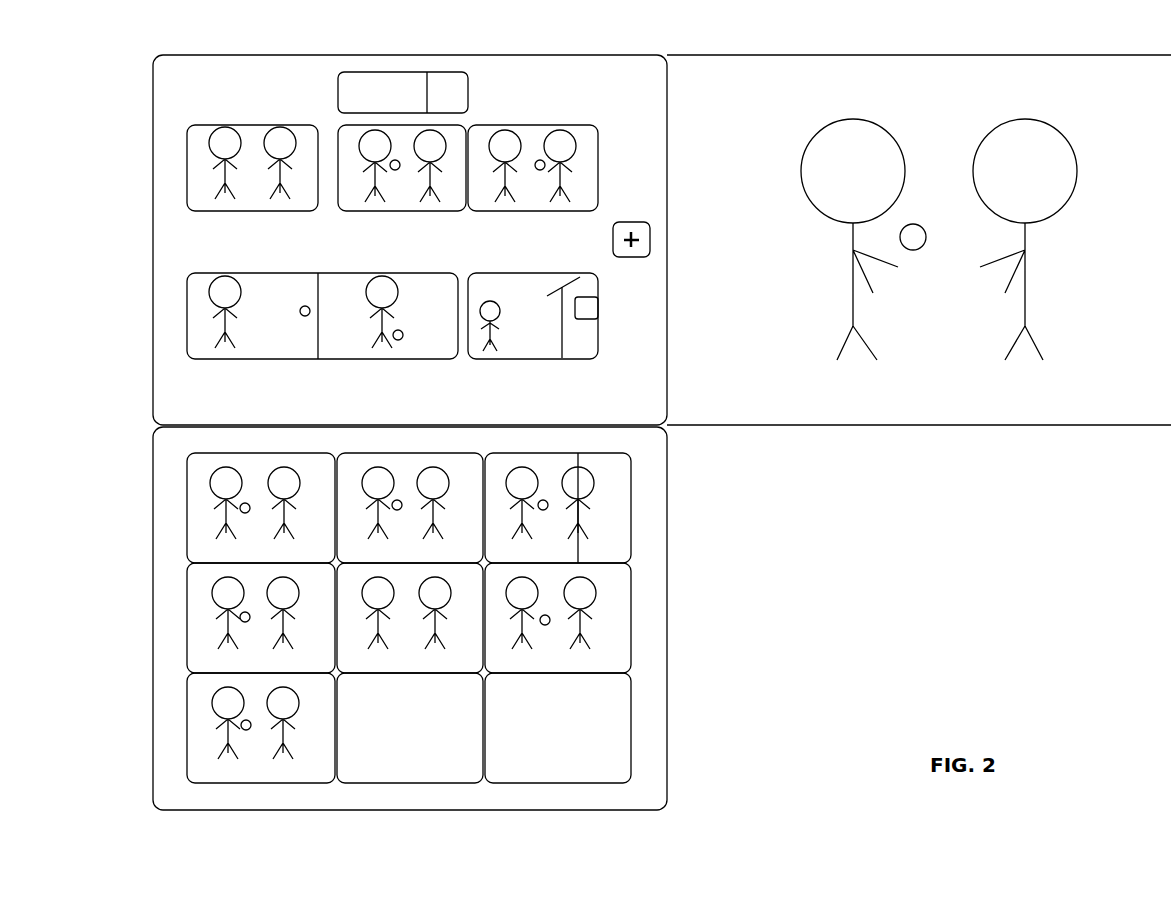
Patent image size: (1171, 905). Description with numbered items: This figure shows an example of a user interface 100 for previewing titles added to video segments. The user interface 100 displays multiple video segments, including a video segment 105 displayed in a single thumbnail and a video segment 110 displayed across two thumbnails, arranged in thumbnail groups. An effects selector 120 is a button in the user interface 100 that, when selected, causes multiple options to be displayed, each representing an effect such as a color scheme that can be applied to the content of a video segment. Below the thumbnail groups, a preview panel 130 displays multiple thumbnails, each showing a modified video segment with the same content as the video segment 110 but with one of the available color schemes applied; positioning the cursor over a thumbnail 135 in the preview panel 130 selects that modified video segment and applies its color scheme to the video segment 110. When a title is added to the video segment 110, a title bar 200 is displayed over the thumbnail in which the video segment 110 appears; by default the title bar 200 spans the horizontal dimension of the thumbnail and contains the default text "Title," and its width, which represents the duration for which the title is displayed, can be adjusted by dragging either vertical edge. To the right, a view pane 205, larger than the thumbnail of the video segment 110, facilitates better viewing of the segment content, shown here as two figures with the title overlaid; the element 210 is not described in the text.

The user interface 100 is at (153, 358).
The video segment 105 is at (187, 173).
The video segment 110 is at (270, 180).
The effects selector 120 is at (613, 243).
The title bar 200 is at (338, 90).
The preview panel 130 is at (153, 528).
The thumbnail 135 is at (631, 509).
The view pane 205 is at (875, 425).
The media content preview 210 is at (978, 313).